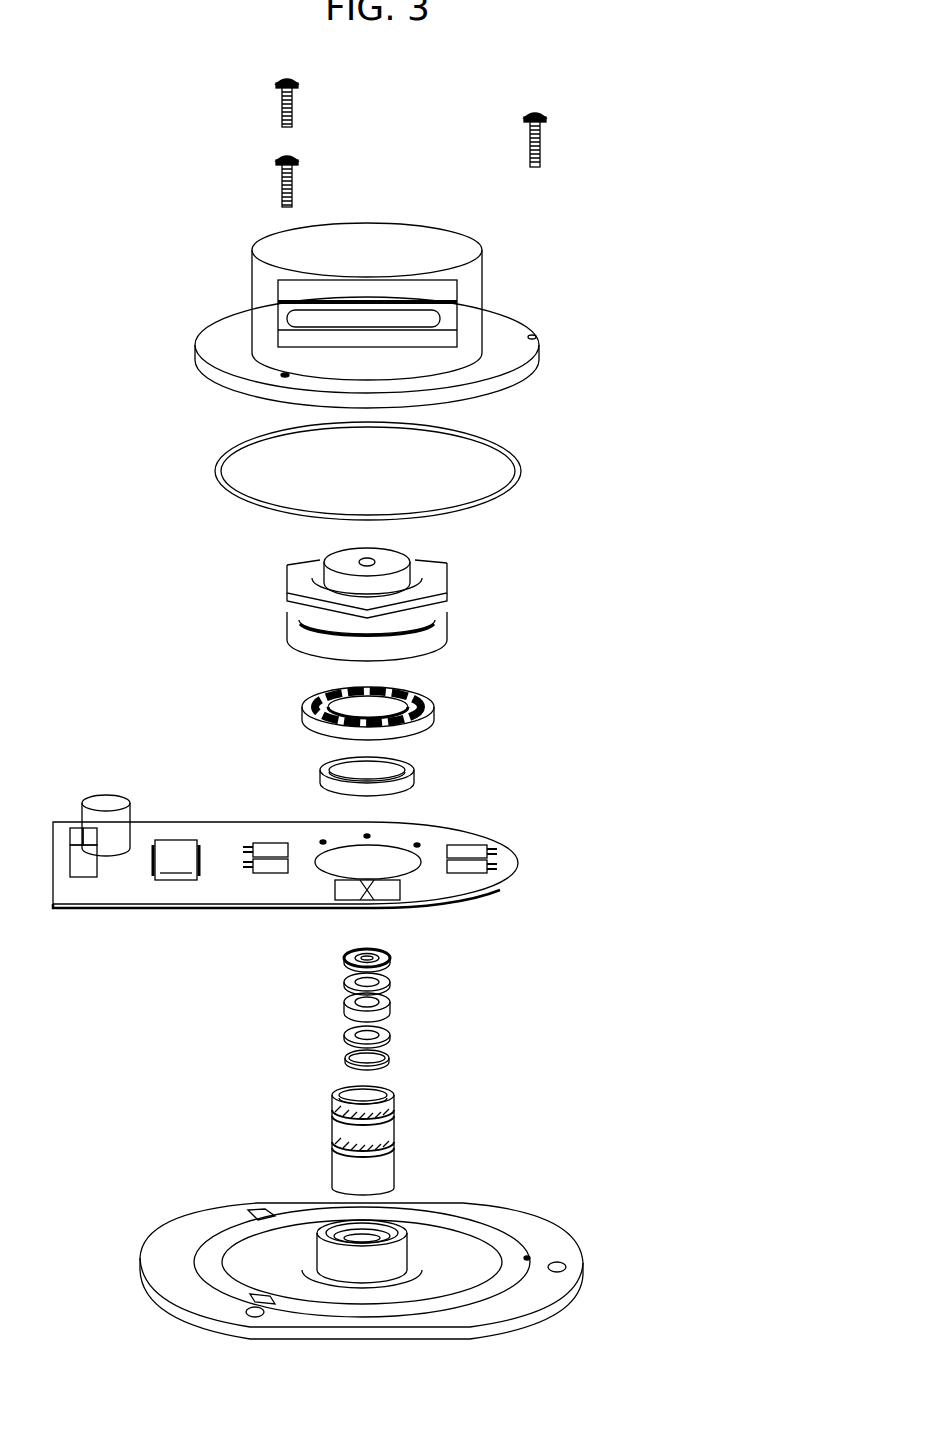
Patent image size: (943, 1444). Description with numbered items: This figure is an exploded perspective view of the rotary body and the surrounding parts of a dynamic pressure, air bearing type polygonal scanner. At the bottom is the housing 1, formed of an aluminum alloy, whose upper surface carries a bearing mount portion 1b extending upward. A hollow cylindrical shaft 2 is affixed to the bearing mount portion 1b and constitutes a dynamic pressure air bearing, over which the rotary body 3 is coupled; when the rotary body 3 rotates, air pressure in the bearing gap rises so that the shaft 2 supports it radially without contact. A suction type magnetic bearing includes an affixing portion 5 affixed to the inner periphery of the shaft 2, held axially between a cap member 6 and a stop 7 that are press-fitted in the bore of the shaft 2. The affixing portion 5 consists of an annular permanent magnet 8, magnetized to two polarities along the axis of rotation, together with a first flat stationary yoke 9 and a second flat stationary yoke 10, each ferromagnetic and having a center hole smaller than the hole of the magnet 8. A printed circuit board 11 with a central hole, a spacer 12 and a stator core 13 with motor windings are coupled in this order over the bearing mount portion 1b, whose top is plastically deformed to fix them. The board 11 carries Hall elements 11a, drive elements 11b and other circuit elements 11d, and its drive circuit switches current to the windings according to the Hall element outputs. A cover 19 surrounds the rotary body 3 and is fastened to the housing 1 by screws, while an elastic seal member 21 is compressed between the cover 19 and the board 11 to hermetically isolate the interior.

The housing 1 is at (425, 1260).
The bearing mount portion 1b is at (483, 1218).
The hollow cylindrical shaft 2 is at (422, 1128).
The rotary body 3 is at (482, 610).
The affixing portion 5 is at (525, 962).
The cap member 6 is at (402, 1065).
The stop 7 is at (402, 962).
The annular permanent magnet 8 is at (407, 1012).
The first flat stationary yoke 9 is at (402, 985).
The second flat stationary yoke 10 is at (402, 1042).
The printed circuit board 11 is at (348, 893).
The Hall elements 11a is at (417, 845).
The drive elements 11b is at (288, 862).
The circuit elements 11d is at (83, 868).
The spacer 12 is at (427, 777).
The stator core 13 is at (447, 710).
The cover 19 is at (550, 312).
The elastic seal member 21 is at (528, 468).